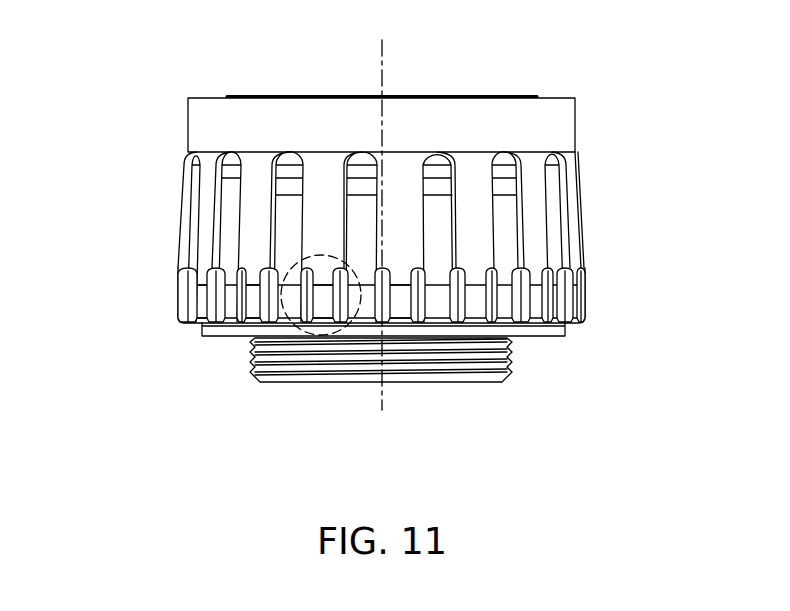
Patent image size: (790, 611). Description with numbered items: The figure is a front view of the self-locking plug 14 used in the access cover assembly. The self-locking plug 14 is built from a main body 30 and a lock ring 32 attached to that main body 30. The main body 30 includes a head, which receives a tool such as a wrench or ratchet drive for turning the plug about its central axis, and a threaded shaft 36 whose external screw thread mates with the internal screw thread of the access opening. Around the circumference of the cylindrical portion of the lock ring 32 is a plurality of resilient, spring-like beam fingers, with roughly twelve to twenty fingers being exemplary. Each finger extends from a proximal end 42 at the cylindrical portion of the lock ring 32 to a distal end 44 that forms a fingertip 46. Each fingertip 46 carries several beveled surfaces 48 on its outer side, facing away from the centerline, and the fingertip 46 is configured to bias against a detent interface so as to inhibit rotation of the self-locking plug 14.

The self-locking plug 14 is at (121, 45).
The main body 30 is at (384, 97).
The lock ring 32 is at (557, 86).
The threaded shaft 36 is at (517, 353).
The proximal end 42 is at (587, 148).
The distal end 44 is at (617, 283).
The fingertip 46 is at (305, 337).
The beveled surfaces 48 is at (385, 318).